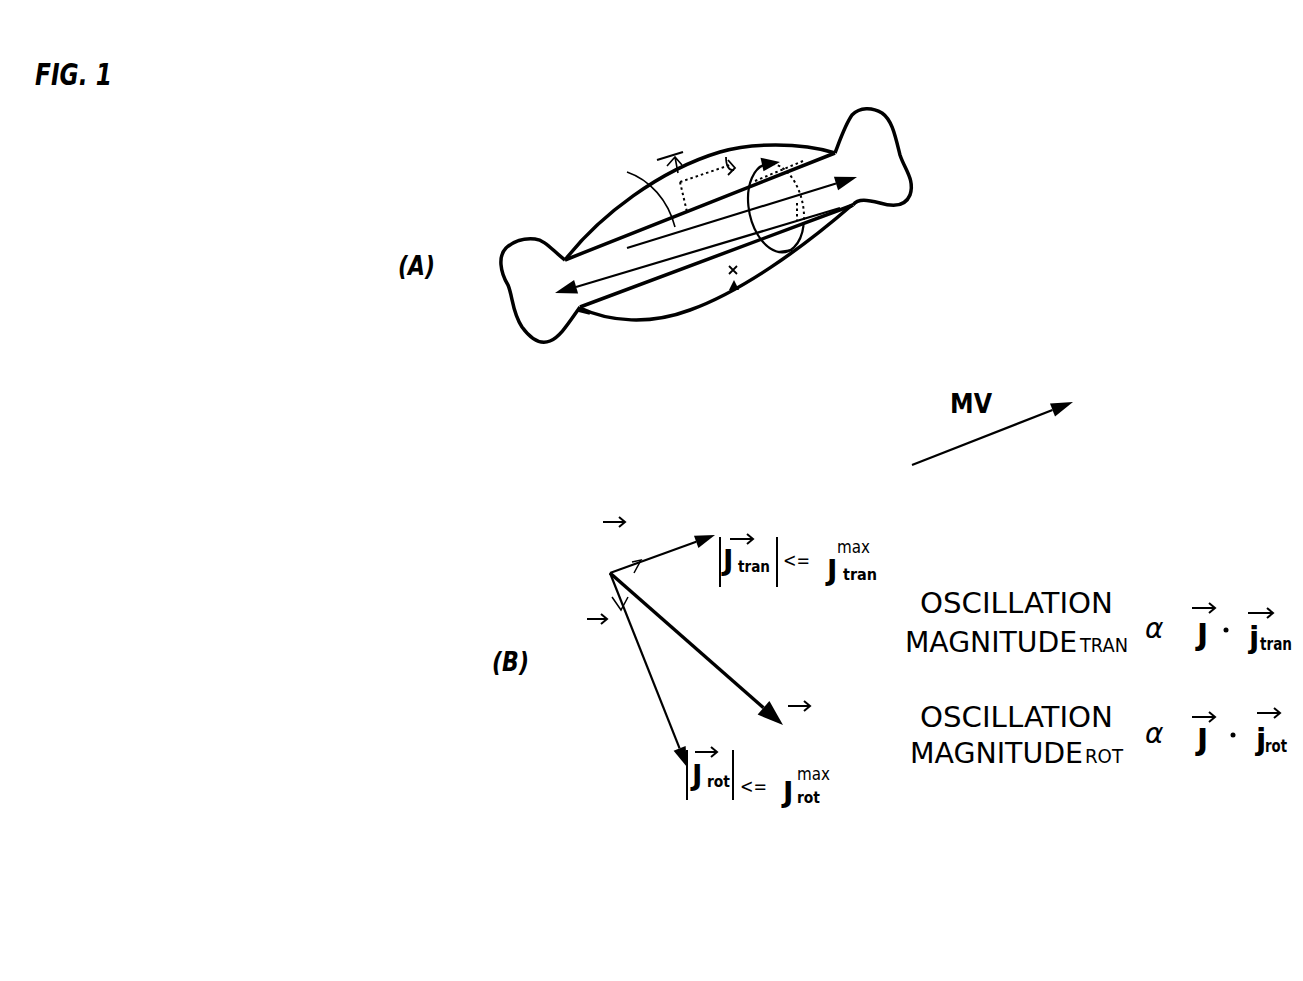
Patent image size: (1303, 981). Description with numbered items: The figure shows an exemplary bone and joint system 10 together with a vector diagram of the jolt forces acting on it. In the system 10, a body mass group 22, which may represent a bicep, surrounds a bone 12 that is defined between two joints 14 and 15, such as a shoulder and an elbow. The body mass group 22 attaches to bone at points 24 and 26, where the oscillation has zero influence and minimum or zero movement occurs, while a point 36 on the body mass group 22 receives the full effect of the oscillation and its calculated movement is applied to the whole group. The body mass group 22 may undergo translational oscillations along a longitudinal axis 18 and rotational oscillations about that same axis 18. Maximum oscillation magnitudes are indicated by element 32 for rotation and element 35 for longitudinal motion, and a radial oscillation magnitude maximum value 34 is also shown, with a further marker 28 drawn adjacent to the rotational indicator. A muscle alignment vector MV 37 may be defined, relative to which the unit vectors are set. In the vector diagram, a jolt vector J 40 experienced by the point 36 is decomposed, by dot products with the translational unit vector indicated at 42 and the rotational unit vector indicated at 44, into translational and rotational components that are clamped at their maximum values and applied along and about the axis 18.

The system 10 is at (764, 48).
The bone 12 is at (593, 247).
The joint 14 is at (522, 238).
The joint 15 is at (865, 108).
The longitudinal axis 18 is at (655, 258).
The body mass group 22 is at (630, 318).
The attachment point 24 is at (578, 310).
The attachment point 26 is at (853, 208).
The rotation path 28 is at (785, 252).
The maximum rotational oscillation magnitude 32 is at (782, 160).
The radial oscillation magnitude maximum value 34 is at (658, 158).
The maximum longitudinal oscillation magnitude 35 is at (726, 157).
The point 36 is at (735, 288).
The muscle alignment vector MV 37 is at (627, 173).
The jolt vector J 40 is at (745, 680).
The translational unit vector 42 is at (690, 540).
The rotational unit vector 44 is at (653, 688).